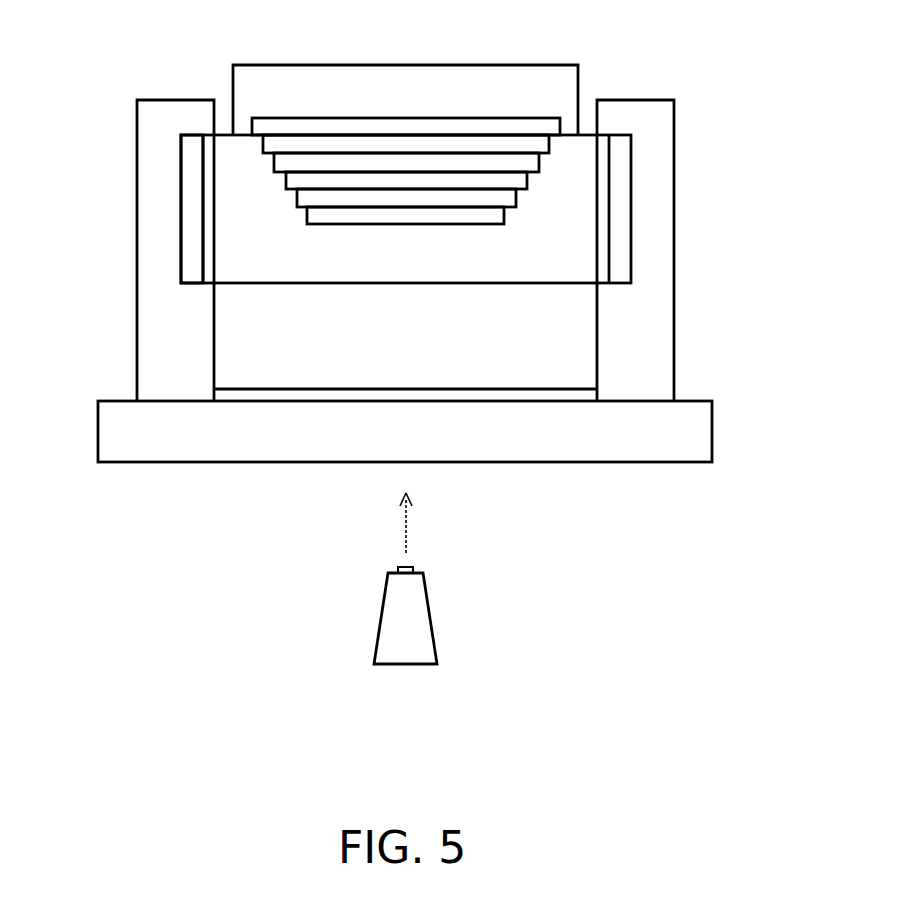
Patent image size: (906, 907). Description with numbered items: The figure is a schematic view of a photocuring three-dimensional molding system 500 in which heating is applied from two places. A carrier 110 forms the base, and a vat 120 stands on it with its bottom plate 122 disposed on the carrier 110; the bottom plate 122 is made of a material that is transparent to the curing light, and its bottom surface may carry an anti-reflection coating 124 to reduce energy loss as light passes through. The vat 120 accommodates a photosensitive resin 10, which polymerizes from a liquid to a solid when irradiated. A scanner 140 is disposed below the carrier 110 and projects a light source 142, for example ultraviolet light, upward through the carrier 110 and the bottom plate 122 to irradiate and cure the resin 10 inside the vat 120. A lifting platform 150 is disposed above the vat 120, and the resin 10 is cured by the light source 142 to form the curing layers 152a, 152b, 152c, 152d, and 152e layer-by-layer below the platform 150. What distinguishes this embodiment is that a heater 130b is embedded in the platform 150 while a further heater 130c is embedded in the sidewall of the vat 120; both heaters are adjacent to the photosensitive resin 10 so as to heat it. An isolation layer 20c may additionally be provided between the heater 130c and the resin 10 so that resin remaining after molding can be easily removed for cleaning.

The photocuring three-dimensional molding system 500 is at (88, 58).
The photosensitive resin 10 is at (393, 221).
The isolation layer 20c is at (203, 223).
The carrier 110 is at (704, 430).
The vat 120 is at (392, 250).
The bottom plate 122 is at (584, 368).
The anti-reflection coating 124 is at (233, 393).
The heater 130b is at (503, 125).
The heater 130c is at (190, 187).
The scanner 140 is at (422, 618).
The light source 142 is at (408, 530).
The platform 150 is at (572, 112).
The curing layer 152a is at (548, 145).
The curing layer 152b is at (530, 162).
The curing layer 152c is at (518, 178).
The curing layer 152d is at (507, 197).
The curing layer 152e is at (495, 213).